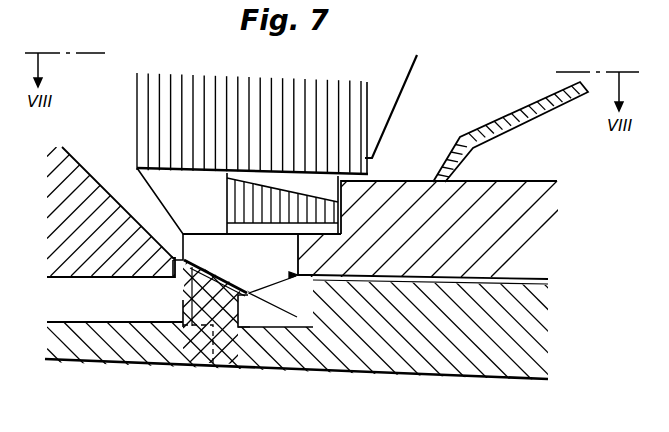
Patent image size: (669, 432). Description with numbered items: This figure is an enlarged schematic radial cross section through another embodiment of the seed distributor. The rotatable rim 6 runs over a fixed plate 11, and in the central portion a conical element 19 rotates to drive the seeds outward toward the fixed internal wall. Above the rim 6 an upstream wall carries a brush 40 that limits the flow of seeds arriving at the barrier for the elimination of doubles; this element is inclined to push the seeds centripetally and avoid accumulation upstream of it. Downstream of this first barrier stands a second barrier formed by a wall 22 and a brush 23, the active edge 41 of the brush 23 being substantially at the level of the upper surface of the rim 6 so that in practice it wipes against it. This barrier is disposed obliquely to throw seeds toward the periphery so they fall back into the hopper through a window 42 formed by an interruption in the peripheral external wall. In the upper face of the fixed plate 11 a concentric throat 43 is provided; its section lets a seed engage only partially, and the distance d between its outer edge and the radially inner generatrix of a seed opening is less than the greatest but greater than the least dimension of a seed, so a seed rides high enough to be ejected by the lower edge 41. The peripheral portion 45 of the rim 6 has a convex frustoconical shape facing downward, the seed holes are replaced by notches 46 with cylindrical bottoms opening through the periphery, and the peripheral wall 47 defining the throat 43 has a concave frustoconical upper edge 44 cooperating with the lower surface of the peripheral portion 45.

The rim 6 is at (499, 191).
The fixed plate 11 is at (511, 371).
The conical element 19 is at (521, 97).
The barrier wall 22 is at (325, 188).
The brush 23 is at (250, 221).
The brush 40 is at (358, 137).
The active edge of the brush 41 is at (273, 224).
The window 42 is at (162, 187).
The concentric throat 43 is at (254, 322).
The concave frustoconical upper edge 44 is at (194, 266).
The peripheral portion of the rim 45 is at (188, 263).
The notches 46 is at (201, 308).
The peripheral wall 47 is at (189, 318).